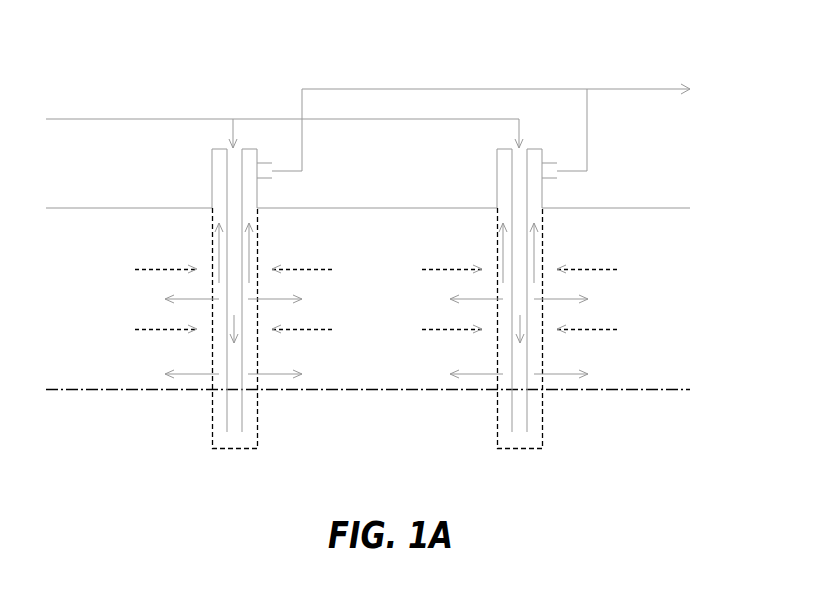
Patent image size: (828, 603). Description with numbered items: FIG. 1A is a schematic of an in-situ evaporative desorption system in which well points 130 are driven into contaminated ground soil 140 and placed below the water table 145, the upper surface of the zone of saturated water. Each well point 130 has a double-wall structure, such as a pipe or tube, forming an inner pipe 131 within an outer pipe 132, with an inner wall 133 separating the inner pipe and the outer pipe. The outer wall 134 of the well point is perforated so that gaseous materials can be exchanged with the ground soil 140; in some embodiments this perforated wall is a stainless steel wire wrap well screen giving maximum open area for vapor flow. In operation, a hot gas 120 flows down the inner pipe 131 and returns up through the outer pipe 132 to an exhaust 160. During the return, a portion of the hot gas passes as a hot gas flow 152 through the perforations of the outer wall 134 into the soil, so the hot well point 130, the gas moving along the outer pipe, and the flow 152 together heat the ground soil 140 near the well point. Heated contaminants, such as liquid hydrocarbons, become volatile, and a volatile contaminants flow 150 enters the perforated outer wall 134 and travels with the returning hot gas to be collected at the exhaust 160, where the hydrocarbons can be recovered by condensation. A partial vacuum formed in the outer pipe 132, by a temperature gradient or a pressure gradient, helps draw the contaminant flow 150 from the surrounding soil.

The hot gas 120 is at (121, 119).
The well point 130 is at (273, 402).
The inner pipe 131 is at (233, 412).
The outer pipe 132 is at (220, 412).
The inner wall 133 is at (242, 313).
The outer wall 134 is at (212, 278).
The ground soil 140 is at (112, 258).
The water table 145 is at (625, 388).
The volatile contaminants flow 150 is at (589, 269).
The hot gas flow 152 is at (557, 374).
The exhaust 160 is at (630, 89).